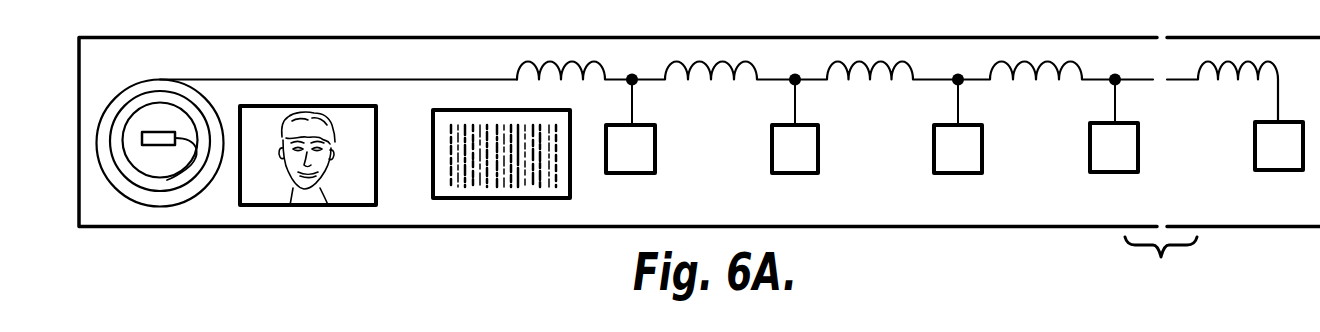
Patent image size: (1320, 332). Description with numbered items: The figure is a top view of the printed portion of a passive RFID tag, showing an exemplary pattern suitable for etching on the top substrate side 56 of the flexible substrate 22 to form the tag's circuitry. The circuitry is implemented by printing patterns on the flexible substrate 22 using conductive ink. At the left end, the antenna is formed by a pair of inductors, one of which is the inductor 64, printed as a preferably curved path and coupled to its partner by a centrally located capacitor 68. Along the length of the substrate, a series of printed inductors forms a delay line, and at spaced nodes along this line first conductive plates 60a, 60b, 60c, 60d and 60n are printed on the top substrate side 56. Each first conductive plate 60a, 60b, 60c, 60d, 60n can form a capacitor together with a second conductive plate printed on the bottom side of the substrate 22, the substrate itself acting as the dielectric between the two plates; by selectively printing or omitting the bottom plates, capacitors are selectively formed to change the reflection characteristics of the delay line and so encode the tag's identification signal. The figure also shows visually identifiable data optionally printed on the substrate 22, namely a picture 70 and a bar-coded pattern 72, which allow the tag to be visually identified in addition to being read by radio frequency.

The flexible substrate 22 is at (699, 157).
The top substrate side 56 is at (415, 203).
The inductor 64 is at (143, 203).
The capacitor 68 is at (163, 140).
The picture 70 is at (328, 205).
The bar-coded pattern 72 is at (533, 196).
The first conductive plate 60a is at (643, 152).
The first conductive plate 60b is at (805, 148).
The first conductive plate 60c is at (970, 143).
The first conductive plate 60d is at (1107, 152).
The first conductive plate 60n is at (1268, 145).